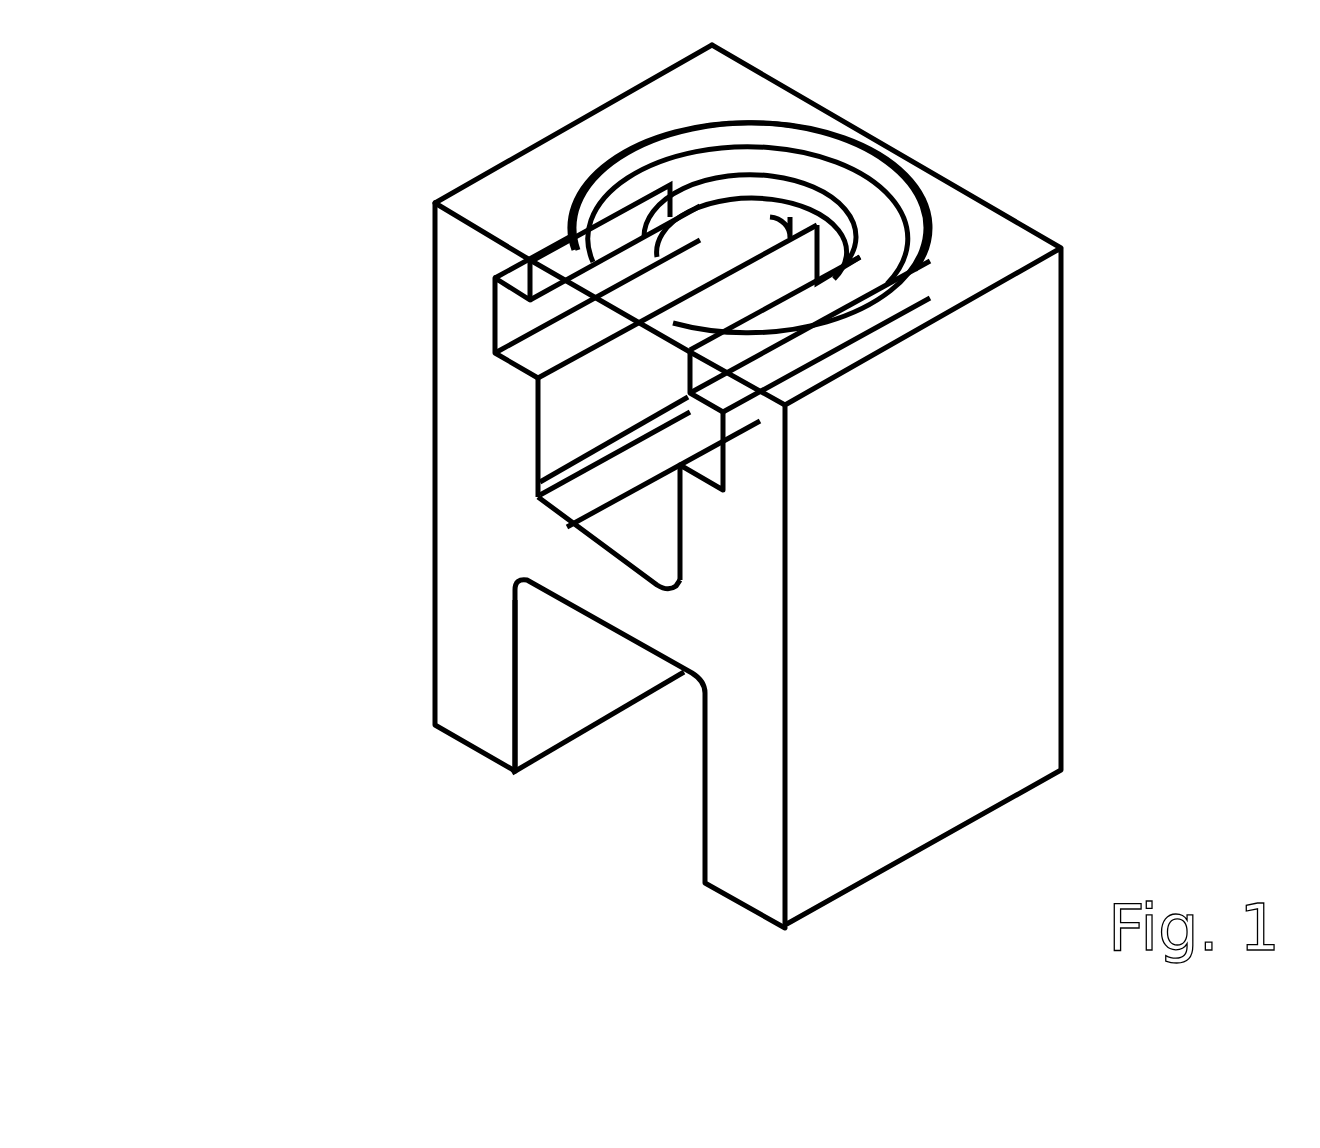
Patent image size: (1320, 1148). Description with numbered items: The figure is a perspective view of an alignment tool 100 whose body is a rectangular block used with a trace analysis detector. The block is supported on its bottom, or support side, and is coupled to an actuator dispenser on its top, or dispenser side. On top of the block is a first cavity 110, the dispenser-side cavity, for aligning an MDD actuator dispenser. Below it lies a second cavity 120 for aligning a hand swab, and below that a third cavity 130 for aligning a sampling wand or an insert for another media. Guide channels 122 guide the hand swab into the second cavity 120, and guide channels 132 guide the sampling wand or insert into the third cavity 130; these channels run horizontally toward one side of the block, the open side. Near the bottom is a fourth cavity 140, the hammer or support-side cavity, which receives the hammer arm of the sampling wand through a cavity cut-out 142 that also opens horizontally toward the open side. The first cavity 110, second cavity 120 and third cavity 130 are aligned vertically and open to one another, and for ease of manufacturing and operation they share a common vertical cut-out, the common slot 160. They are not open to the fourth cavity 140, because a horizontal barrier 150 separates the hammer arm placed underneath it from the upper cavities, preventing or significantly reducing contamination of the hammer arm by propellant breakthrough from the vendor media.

The alignment tool 100 is at (232, 780).
The first cavity 110 is at (808, 166).
The second cavity 120 is at (772, 203).
The guide channels 122 is at (508, 284).
The third cavity 130 is at (735, 246).
The guide channels 132 is at (510, 328).
The fourth cavity 140 is at (597, 639).
The cavity cut-out 142 is at (544, 712).
The horizontal barrier 150 is at (655, 606).
The common slot 160 is at (672, 523).